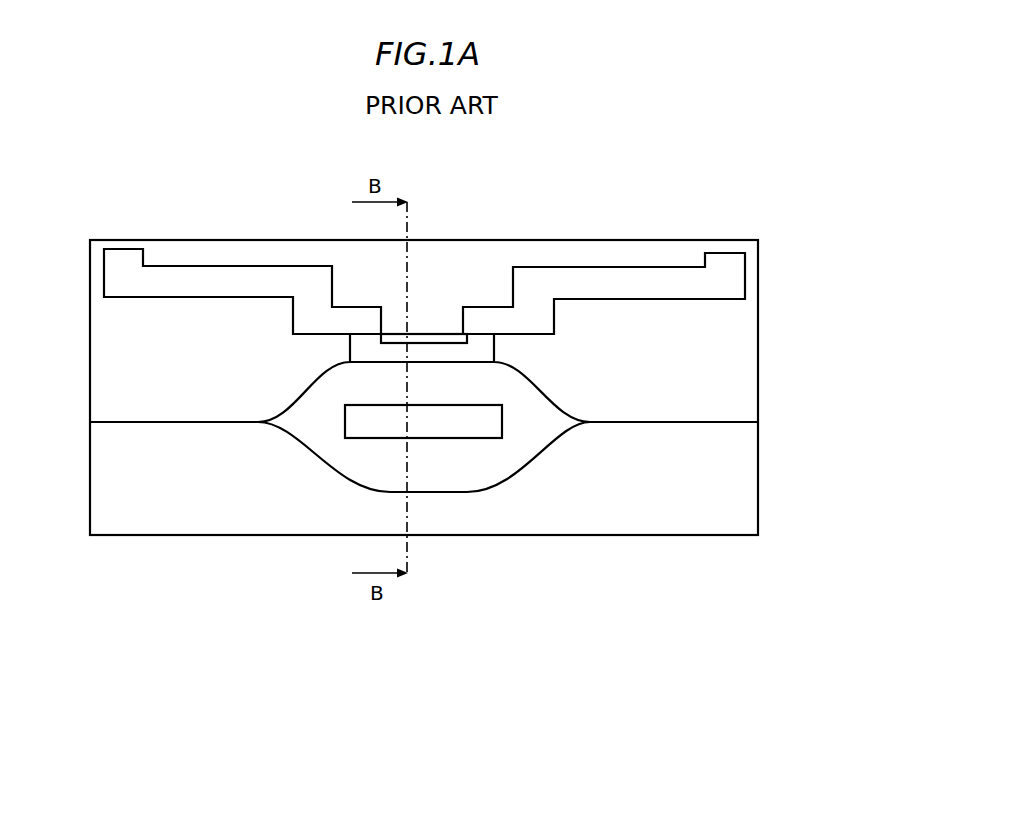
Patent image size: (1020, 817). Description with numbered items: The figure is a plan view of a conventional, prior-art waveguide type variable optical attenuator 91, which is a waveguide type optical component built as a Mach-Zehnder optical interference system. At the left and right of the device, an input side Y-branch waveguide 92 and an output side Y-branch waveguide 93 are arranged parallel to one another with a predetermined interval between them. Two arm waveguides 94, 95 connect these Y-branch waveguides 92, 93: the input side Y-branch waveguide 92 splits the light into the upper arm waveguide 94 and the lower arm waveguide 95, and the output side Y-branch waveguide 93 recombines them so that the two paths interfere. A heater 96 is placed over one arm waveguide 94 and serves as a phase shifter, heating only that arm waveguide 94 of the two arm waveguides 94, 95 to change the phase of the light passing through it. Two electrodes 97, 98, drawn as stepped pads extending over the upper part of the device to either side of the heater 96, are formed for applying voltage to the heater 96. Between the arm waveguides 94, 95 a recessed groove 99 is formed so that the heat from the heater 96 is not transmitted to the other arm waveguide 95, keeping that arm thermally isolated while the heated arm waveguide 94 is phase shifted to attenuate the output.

The waveguide type variable optical attenuator 91 is at (613, 575).
The input side Y-branch waveguide 92 is at (260, 423).
The output side Y-branch waveguide 93 is at (647, 425).
The arm waveguide 94 is at (500, 365).
The arm waveguide 95 is at (347, 480).
The heater 96 is at (436, 335).
The electrode 97 is at (250, 266).
The electrode 98 is at (577, 267).
The recessed groove 99 is at (498, 430).